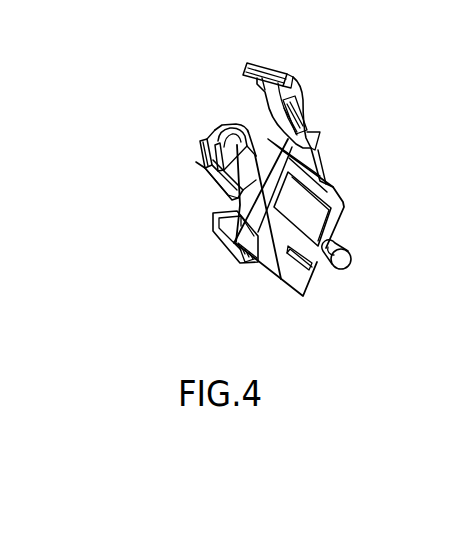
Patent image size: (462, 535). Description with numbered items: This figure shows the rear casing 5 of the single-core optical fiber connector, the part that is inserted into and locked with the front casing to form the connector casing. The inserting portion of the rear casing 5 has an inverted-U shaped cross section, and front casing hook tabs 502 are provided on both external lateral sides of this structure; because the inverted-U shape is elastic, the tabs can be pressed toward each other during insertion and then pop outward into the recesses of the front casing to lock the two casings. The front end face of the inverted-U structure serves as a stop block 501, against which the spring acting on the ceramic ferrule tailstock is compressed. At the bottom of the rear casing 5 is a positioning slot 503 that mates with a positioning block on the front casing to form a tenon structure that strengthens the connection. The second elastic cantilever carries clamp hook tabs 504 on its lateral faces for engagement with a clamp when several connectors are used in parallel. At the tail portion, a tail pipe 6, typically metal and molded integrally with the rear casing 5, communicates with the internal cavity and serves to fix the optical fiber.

The rear casing 5 is at (281, 257).
The stop block 501 is at (220, 123).
The front casing hook tabs 502 is at (240, 184).
The positioning slot 503 is at (242, 236).
The clamp hook tabs 504 is at (302, 122).
The tail pipe 6 is at (345, 250).